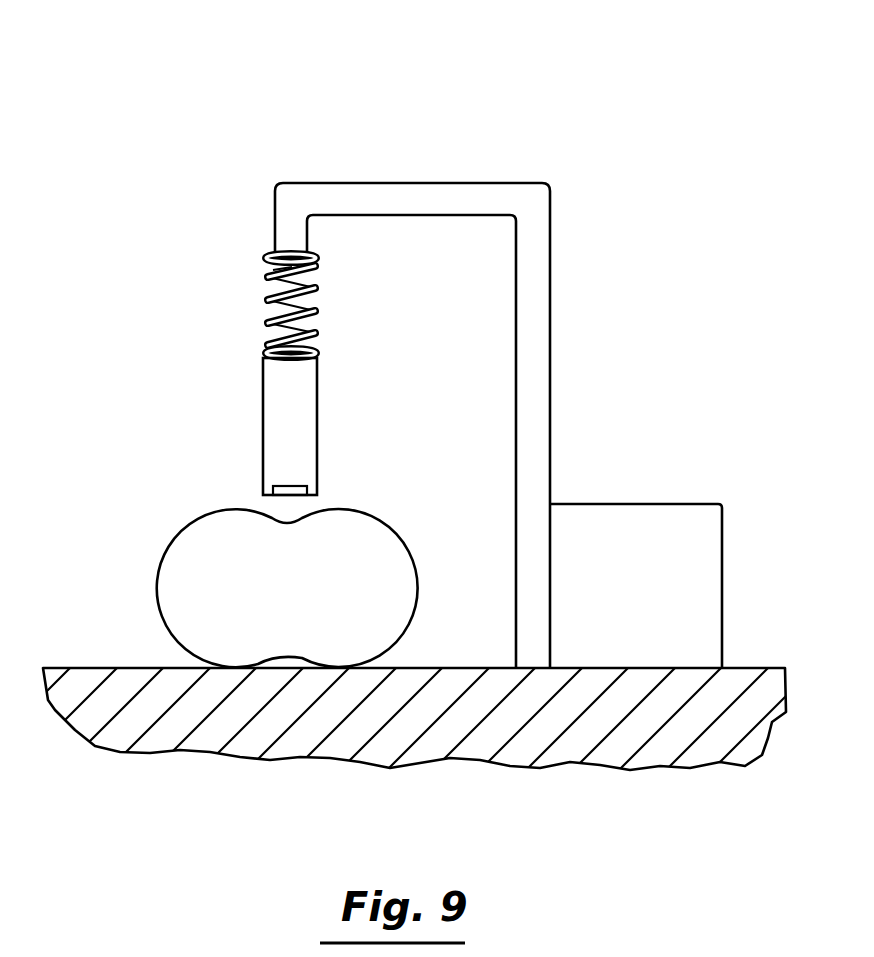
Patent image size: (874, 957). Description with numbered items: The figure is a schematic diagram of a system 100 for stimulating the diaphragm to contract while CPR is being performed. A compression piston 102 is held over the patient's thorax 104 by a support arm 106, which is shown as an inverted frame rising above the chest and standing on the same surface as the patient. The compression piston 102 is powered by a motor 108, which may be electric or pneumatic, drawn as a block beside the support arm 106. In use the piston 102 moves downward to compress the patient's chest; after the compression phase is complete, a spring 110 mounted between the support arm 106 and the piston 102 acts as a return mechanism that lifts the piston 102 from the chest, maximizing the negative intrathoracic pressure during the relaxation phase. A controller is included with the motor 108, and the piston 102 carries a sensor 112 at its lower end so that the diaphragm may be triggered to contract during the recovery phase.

The system 100 is at (565, 145).
The compression piston 102 is at (280, 418).
The patient's thorax 104 is at (175, 533).
The support arm 106 is at (537, 264).
The motor 108 is at (622, 504).
The spring 110 is at (313, 290).
The sensor 112 is at (292, 486).